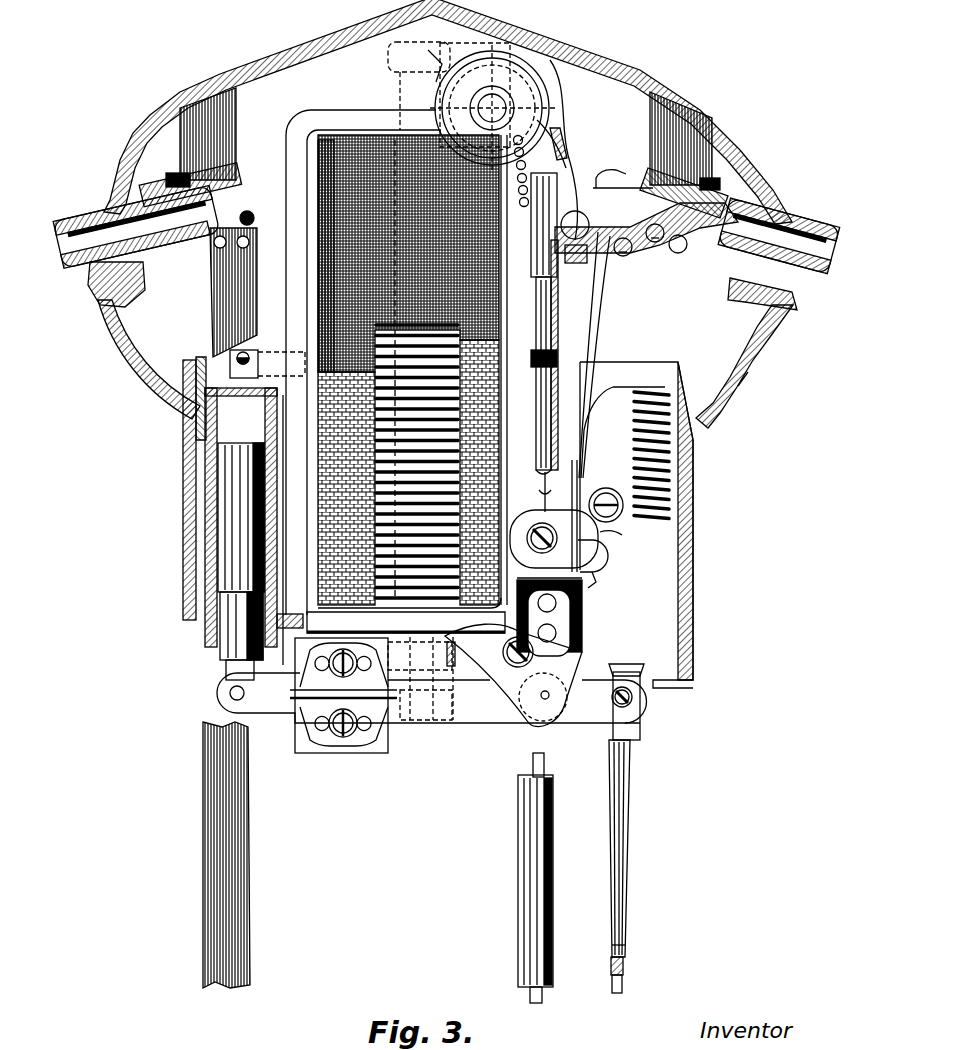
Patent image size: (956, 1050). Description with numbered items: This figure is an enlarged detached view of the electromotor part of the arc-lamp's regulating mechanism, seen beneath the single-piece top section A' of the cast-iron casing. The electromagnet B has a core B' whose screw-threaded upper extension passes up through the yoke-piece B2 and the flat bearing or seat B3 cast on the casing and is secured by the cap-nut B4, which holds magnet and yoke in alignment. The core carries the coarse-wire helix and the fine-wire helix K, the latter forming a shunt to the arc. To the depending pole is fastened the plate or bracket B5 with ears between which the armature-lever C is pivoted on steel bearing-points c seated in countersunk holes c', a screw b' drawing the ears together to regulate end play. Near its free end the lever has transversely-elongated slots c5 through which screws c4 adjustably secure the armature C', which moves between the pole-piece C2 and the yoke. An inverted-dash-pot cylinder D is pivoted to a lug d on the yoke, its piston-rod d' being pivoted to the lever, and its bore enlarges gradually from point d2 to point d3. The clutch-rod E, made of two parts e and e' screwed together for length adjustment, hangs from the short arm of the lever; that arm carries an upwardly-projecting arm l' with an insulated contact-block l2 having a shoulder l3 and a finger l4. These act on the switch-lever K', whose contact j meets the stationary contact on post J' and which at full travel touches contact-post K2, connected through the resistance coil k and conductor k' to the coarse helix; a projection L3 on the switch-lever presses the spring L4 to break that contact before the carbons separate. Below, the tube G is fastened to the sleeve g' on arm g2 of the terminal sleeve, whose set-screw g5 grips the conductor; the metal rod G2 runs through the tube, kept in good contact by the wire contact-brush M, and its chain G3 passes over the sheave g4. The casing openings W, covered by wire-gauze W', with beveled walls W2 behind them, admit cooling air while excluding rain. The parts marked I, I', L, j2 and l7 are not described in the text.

The top section A' is at (440, 209).
The yoke-piece B2 is at (362, 378).
The flat bearing or seat B3 is at (243, 123).
The cap-nut B4 is at (430, 44).
The sheave g4 is at (551, 95).
The chain G3 is at (570, 150).
The spring L4 is at (618, 182).
The projection L3 is at (646, 230).
The core B' is at (383, 367).
The left bracket I is at (150, 216).
The bracket plate I' is at (223, 599).
The point of cylinder bore d3 is at (200, 382).
The lug d is at (256, 367).
The beveled casing walls W2 is at (183, 400).
The inverted-dash-pot cylinder D is at (205, 500).
The piston-rod d' is at (201, 517).
The point of cylinder bore d2 is at (207, 592).
The lining L is at (336, 416).
The fine-wire helix K is at (400, 465).
The electromagnet B is at (419, 371).
The tube G is at (534, 385).
The sleeve g' is at (533, 208).
The arm g2 is at (620, 258).
The set-screw g5 is at (684, 252).
The switch-lever K' is at (594, 355).
The wire-gauze W' is at (726, 386).
The openings W is at (746, 353).
The conductor k' is at (623, 428).
The resistance coil or stack k is at (644, 455).
The wire contact-brush M is at (560, 355).
The contact-post K2 is at (606, 493).
The contact-post J' is at (554, 520).
The link rod j2 is at (566, 535).
The contact j is at (612, 541).
The finger l4 is at (605, 558).
The contact-block l2 is at (590, 584).
The shoulder l3 is at (570, 576).
The upwardly-projecting arm l' is at (549, 618).
The screw b' is at (508, 652).
The plate or bracket B5 is at (391, 623).
The pole-piece C2 is at (421, 678).
The transversely-elongated slots c5 is at (331, 693).
The screws c4 is at (343, 694).
The armature-lever C is at (432, 698).
The countersunk holes c' is at (543, 697).
The steel bearing-points c is at (551, 703).
The bracket l7 is at (619, 698).
The armature C' is at (341, 710).
The metal rod G2 is at (532, 762).
The clutch-rod E is at (625, 848).
The clutch-rod part e is at (624, 936).
The clutch-rod part e' is at (605, 975).